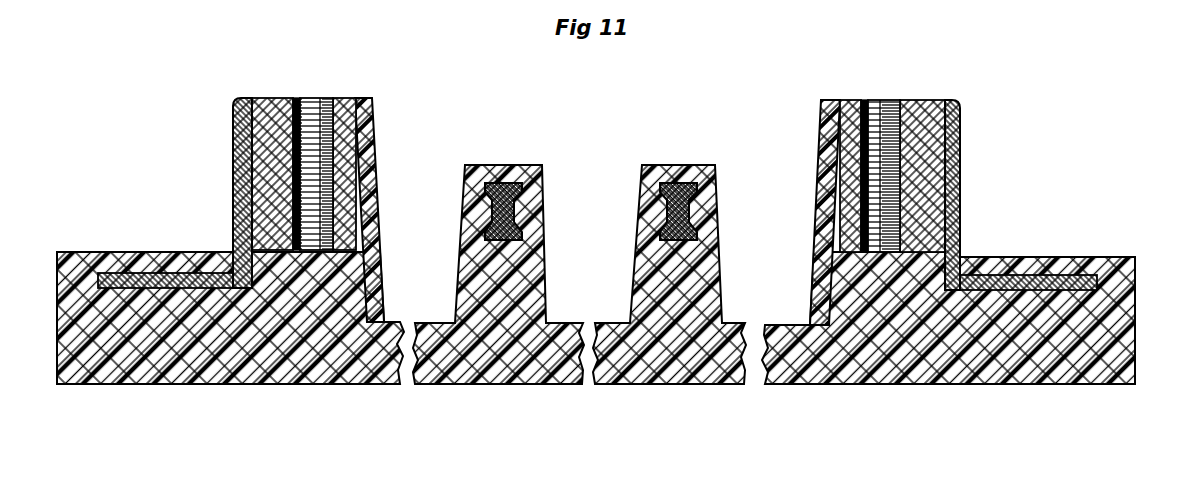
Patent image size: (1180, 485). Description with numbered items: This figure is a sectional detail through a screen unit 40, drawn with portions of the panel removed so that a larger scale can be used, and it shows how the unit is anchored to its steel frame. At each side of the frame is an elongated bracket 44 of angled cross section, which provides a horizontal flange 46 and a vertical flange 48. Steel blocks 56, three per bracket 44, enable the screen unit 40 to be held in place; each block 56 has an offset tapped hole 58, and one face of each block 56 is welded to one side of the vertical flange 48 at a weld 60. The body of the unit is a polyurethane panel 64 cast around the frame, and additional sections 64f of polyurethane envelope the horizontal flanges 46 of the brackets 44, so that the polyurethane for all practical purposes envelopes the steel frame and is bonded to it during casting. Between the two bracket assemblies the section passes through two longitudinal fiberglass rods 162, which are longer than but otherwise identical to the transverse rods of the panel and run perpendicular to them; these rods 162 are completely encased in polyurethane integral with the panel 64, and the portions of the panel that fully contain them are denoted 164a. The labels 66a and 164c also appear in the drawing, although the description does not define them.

The screen unit 40 is at (596, 281).
The polyurethane panel 64 is at (115, 355).
The polyurethane section 64f is at (173, 270).
The horizontal flange 46 is at (120, 270).
The elongated bracket 44 is at (232, 173).
The vertical flange 48 is at (233, 118).
The weld 60 is at (268, 97).
The offset tapped hole 58 is at (318, 118).
The steel block 56 is at (343, 135).
The top portion 66a is at (303, 51).
The panel portion 164a is at (495, 172).
The pedestal 164c is at (483, 218).
The longitudinal fiberglass rod 162 is at (516, 204).